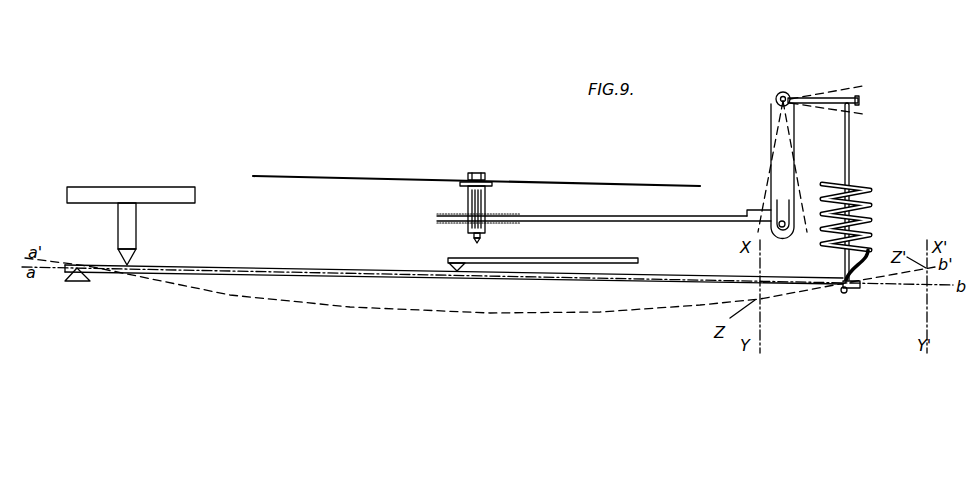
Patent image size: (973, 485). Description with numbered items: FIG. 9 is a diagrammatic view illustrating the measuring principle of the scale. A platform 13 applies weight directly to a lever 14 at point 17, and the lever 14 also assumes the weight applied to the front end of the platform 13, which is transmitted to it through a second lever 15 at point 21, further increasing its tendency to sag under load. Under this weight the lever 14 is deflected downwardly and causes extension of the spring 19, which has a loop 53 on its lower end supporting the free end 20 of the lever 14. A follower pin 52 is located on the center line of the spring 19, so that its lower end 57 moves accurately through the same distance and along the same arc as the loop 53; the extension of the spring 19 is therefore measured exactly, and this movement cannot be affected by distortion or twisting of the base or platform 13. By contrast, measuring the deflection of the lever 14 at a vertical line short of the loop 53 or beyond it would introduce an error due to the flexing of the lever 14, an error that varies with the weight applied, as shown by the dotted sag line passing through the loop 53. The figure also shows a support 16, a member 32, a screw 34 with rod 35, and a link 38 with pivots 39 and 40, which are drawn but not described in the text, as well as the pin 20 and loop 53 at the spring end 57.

The platform 13 is at (170, 192).
The lever 14 is at (241, 267).
The lever 15 is at (583, 259).
The pivot support 16 is at (77, 283).
The point of weight application 17 is at (134, 258).
The spring 19 is at (870, 212).
The free end of the lever 20 is at (858, 290).
The point of transmission 21 is at (447, 262).
The arm 32 is at (565, 182).
The adjusting screw 34 is at (488, 207).
The threaded rod 35 is at (587, 218).
The link 38 is at (778, 177).
The pivot 39 is at (782, 228).
The pivot 40 is at (781, 99).
The follower pin 52 is at (851, 156).
The loop 53 is at (842, 294).
The lower end of the follower pin 57 is at (843, 279).